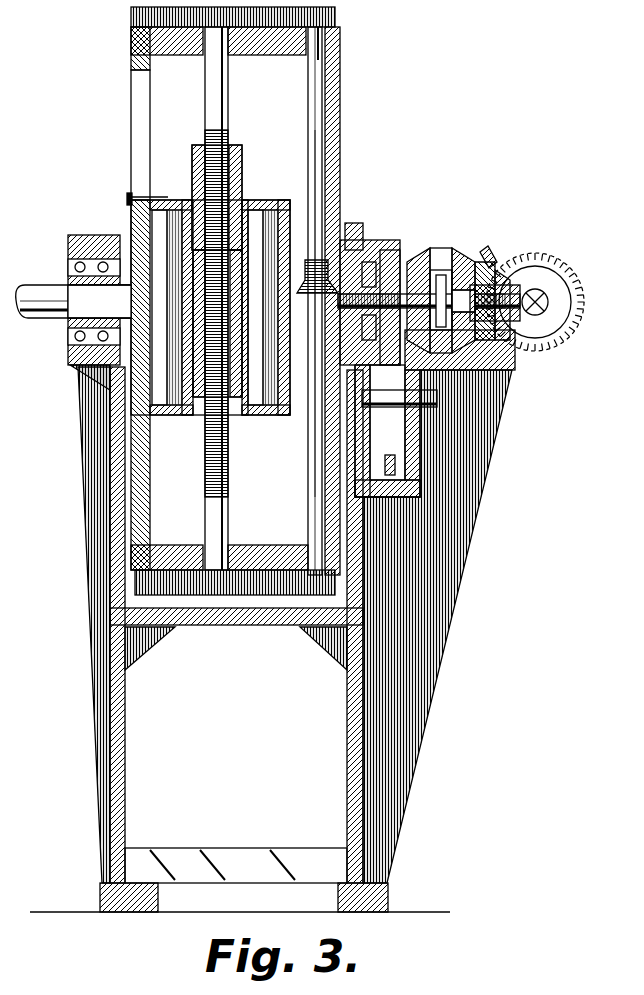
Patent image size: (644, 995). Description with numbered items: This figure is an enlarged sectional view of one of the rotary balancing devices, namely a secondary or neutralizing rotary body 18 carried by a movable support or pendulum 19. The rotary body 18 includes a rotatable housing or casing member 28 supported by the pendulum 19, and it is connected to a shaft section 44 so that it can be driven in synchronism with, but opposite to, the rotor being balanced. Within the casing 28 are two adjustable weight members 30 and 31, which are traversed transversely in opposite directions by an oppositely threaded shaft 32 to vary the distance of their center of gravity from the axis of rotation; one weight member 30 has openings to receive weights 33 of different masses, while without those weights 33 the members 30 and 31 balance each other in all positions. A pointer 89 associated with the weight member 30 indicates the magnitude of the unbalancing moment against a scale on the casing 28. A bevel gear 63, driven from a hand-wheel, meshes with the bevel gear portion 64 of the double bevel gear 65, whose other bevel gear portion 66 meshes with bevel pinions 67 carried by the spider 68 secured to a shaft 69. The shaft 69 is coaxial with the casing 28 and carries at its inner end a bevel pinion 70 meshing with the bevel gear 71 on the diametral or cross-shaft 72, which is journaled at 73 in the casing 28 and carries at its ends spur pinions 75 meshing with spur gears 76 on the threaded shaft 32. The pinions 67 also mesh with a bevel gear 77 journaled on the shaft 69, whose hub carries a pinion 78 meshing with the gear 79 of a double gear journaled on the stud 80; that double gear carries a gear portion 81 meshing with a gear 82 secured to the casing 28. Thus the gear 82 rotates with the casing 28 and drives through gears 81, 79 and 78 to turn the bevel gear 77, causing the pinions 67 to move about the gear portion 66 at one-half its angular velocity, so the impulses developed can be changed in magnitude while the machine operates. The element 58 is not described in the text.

The secondary or neutralizing rotary body 18 is at (370, 106).
The pendulum 19 is at (118, 675).
The casing member 28 is at (340, 145).
The adjustable weight member 30 is at (248, 202).
The adjustable weight member 31 is at (243, 152).
The oppositely threaded shaft 32 is at (230, 445).
The weights 33 is at (165, 408).
The shaft section 44 is at (45, 296).
The rod 58 is at (318, 60).
The bevel gear 63 is at (574, 280).
The bevel gear portion 64 is at (490, 256).
The double bevel gear 65 is at (482, 262).
The bevel gear portion 66 is at (472, 258).
The bevel pinion 67 is at (450, 250).
The spider 68 is at (432, 250).
The shaft 69 is at (390, 250).
The bevel pinion 70 is at (340, 303).
The bevel gear 71 is at (312, 292).
The diametral or cross-shaft 72 is at (312, 455).
The journal 73 is at (308, 58).
The spur pinion 75 is at (336, 17).
The spur gear 76 is at (131, 12).
The bevel gear 77 is at (408, 252).
The pinion 78 is at (383, 250).
The gear 79 is at (392, 472).
The stud 80 is at (440, 398).
The gear portion 81 is at (385, 500).
The gear 82 is at (368, 250).
The pointer 89 is at (127, 197).